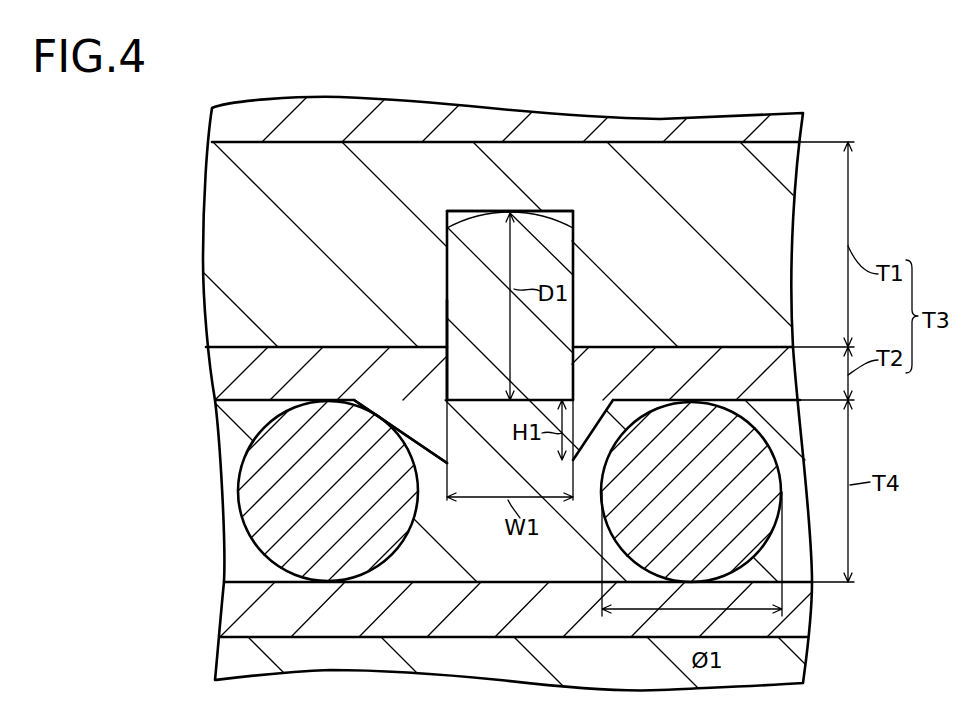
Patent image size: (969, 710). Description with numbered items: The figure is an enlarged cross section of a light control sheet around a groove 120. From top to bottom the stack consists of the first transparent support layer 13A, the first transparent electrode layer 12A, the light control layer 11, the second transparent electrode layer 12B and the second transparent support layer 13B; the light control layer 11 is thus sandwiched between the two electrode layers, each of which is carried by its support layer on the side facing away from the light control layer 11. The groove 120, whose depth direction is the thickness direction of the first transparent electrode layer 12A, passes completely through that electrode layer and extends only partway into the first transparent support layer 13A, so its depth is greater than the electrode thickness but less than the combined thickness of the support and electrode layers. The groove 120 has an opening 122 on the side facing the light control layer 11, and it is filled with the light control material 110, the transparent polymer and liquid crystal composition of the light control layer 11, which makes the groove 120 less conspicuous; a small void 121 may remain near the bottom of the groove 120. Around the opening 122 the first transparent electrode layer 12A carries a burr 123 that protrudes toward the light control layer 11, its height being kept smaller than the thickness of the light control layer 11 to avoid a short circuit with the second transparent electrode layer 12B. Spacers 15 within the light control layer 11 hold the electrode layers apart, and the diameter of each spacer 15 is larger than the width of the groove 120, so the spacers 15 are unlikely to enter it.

The light control layer 11 is at (222, 470).
The first transparent electrode layer 12A is at (207, 382).
The second transparent electrode layer 12B is at (222, 611).
The first transparent support layer 13A is at (207, 243).
The second transparent support layer 13B is at (217, 658).
The spacer 15 is at (390, 562).
The light control material 110 is at (552, 233).
The groove 120 is at (458, 277).
The void 121 is at (445, 210).
The opening 122 is at (453, 402).
The burr 123 is at (443, 460).